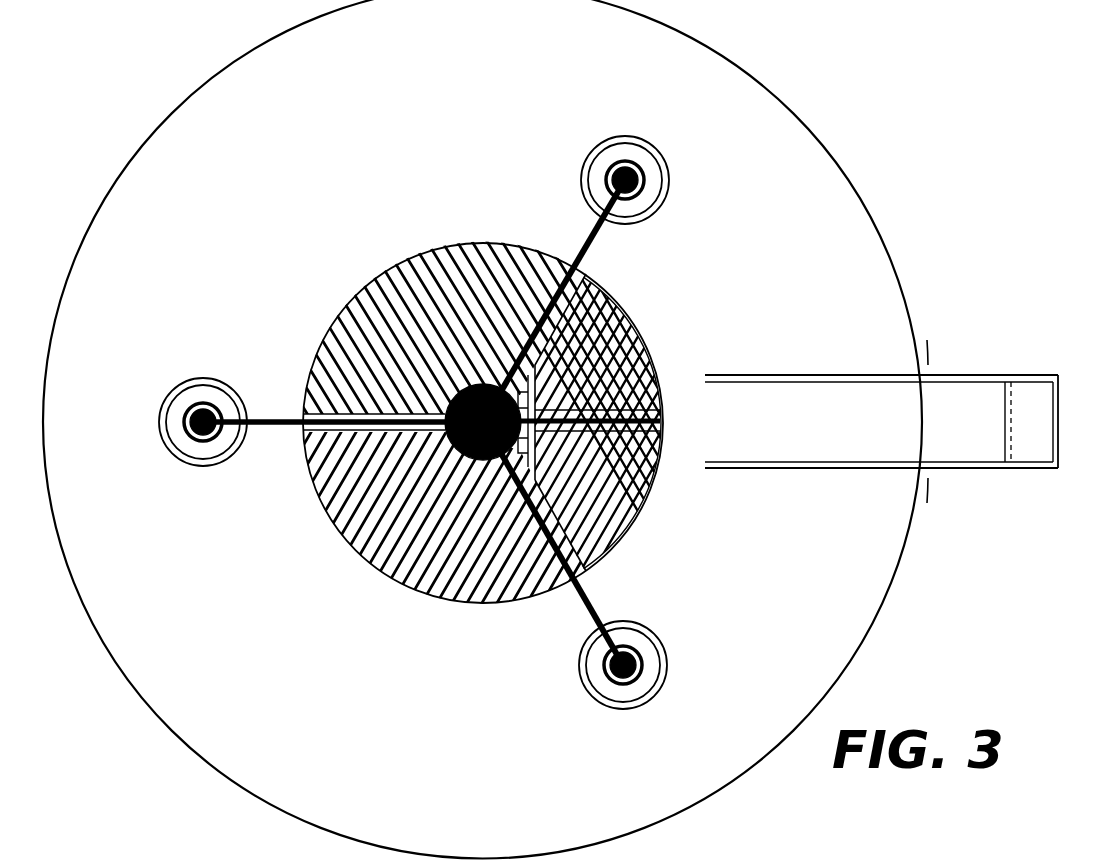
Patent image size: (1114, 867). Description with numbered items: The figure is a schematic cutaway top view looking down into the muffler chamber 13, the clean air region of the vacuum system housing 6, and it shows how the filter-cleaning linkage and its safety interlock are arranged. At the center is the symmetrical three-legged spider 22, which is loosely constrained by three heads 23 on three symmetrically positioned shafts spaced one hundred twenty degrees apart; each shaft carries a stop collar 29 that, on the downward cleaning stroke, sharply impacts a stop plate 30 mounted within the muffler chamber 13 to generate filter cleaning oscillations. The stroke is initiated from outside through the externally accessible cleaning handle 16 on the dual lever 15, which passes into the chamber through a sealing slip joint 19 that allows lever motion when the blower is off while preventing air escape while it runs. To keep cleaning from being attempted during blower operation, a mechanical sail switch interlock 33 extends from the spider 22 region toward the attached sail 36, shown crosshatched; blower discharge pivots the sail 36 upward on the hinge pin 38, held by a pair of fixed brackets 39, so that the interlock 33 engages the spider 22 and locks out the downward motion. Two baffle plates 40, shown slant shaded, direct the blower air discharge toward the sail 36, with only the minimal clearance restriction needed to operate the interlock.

The vacuum system housing 6 is at (845, 162).
The muffler chamber 13 is at (724, 108).
The dual lever 15 is at (805, 385).
The cleaning handle 16 is at (1060, 423).
The sealing slip joint 19 is at (920, 448).
The three-legged spider 22 is at (478, 390).
The heads 23 is at (607, 168).
The stop collars 29 is at (662, 180).
The stop plates 30 is at (668, 200).
The mechanical sail switch interlock 33 is at (658, 425).
The sail 36 is at (630, 343).
The hinge pin 38 is at (582, 270).
The fixed brackets 39 is at (583, 573).
The baffle plates 40 is at (393, 273).